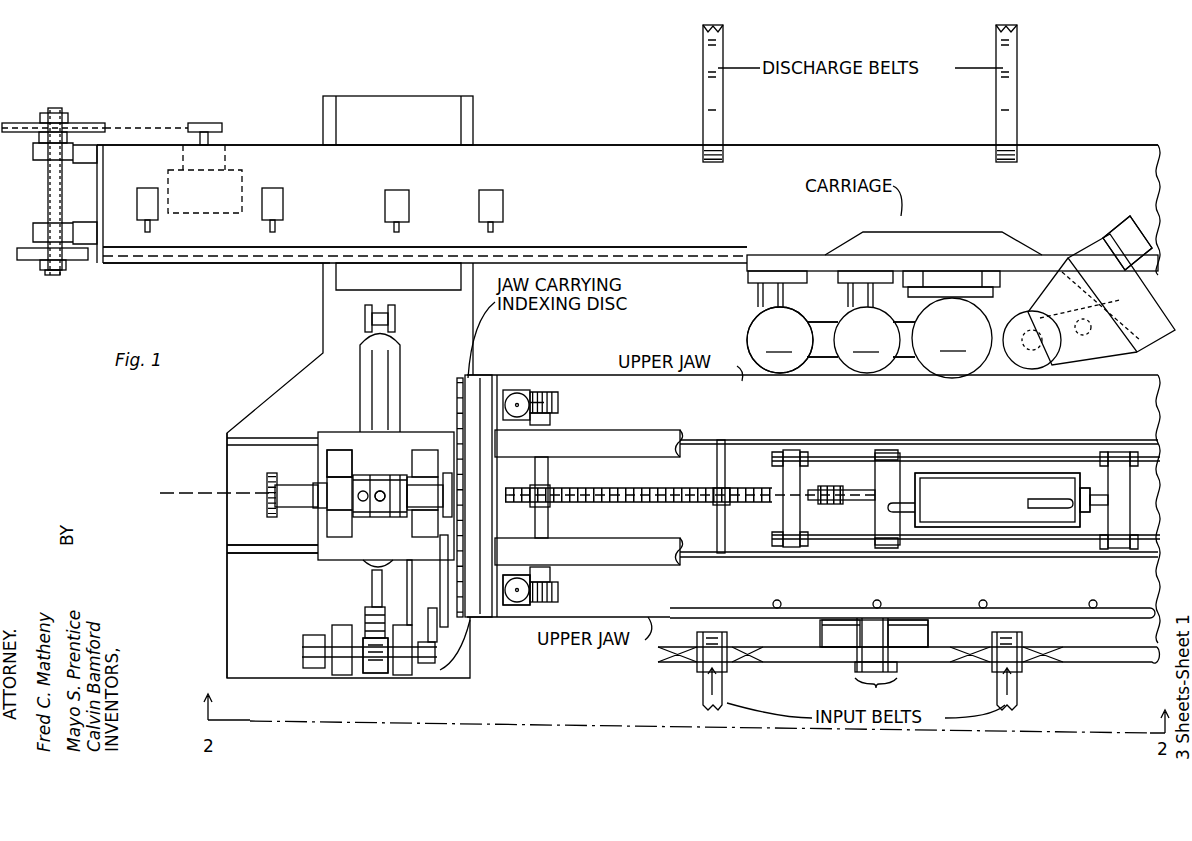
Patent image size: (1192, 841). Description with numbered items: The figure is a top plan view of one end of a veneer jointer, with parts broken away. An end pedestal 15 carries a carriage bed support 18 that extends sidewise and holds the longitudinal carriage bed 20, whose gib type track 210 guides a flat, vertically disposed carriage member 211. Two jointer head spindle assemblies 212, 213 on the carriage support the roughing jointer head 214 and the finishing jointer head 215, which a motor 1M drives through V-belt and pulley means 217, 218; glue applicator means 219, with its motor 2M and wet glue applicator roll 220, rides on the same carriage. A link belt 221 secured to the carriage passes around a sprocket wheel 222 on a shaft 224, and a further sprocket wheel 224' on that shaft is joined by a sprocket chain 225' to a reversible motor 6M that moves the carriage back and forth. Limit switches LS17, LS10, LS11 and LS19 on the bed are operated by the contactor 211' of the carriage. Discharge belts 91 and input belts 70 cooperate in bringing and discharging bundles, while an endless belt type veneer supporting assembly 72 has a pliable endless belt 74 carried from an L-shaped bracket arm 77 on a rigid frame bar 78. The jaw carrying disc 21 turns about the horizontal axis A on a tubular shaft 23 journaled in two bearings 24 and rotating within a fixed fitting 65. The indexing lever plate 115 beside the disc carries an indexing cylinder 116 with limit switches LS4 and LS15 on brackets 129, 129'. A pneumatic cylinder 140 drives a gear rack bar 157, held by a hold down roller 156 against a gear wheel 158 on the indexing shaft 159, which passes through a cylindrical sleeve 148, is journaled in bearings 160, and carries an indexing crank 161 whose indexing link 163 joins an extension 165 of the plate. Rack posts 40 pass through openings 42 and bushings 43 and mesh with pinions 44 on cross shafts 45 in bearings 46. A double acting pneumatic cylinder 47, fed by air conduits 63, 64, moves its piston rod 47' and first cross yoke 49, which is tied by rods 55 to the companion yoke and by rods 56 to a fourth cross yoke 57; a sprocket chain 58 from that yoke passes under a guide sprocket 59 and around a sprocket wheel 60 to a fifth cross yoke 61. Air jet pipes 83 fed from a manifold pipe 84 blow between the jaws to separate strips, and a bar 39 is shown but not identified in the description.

The sprocket wheel 224' is at (53, 111).
The sprocket chain 225' is at (163, 121).
The shaft 224 is at (67, 189).
The sprocket wheel 222 is at (38, 261).
The link belt 221 is at (163, 268).
The limit switch LS17 is at (142, 188).
The reversible motor 6M is at (241, 181).
The limit switch LS10 is at (283, 211).
The limit switch LS11 is at (399, 195).
The limit switch LS19 is at (497, 185).
The carriage bed support 18 is at (396, 102).
The carriage bed 20 is at (543, 152).
The gib type track 210 is at (633, 247).
The discharge belts 91 is at (718, 118).
The carriage member 211 is at (952, 237).
The contactor 211' is at (933, 229).
The jointer head spindle assembly 213 is at (834, 300).
The jointer head spindle assembly 212 is at (742, 343).
The jointer head 214 is at (780, 340).
The jointer head 215 is at (867, 340).
The motor 1M is at (952, 338).
The V-belt and pulley means 217 is at (820, 362).
The V-belt and pulley means 218 is at (920, 362).
The wet glue applicator roll 220 is at (1032, 366).
The motor 2M is at (1140, 332).
The glue applicator means 219 is at (1100, 229).
The pneumatic cylinder 140 is at (366, 388).
The jaw carrying disc 21 is at (457, 387).
The limit switch LS15 is at (386, 496).
The bearings 24 is at (327, 457).
The limit switch LS4 is at (359, 460).
The indexing cylinder 116 is at (413, 478).
The bracket 129 is at (380, 485).
The bracket 129' is at (387, 515).
The fixed fitting 65 is at (276, 485).
The tubular shaft 23 is at (314, 498).
The plate 115 is at (454, 480).
The horizontal axis A is at (173, 493).
The end pedestal 15 is at (232, 548).
The extension 165 is at (442, 549).
The hold down roller 156 is at (367, 622).
The indexing shaft 159 is at (360, 629).
The cylindrical sleeve 148 is at (303, 651).
The bearings 160 is at (342, 660).
The gear wheel 158 is at (380, 655).
The gear rack bar 157 is at (388, 662).
The indexing crank 161 is at (440, 670).
The indexing link 163 is at (447, 627).
The bushing 43 is at (510, 390).
The opening 42 is at (530, 615).
The rack post 40 is at (517, 390).
The jaw bar 39 is at (498, 443).
The cross shaft 45 is at (544, 392).
The pinion 44 is at (556, 392).
The bearings 46 is at (552, 422).
The sprocket wheel 60 is at (515, 486).
The sprocket chain 58 is at (725, 490).
The guide sprocket 59 is at (727, 505).
The fourth cross yoke 57 is at (792, 452).
The fifth cross yoke 61 is at (890, 462).
The rods 56 is at (992, 538).
The air conduit 63 is at (890, 508).
The air conduit 64 is at (1047, 503).
The double acting pneumatic cylinder 47 is at (997, 493).
The piston rod 47' is at (1081, 537).
The first cross yoke 49 is at (1125, 522).
The rods 55 is at (1135, 459).
The air jet pipes 83 is at (877, 598).
The manifold pipe 84 is at (1058, 614).
The input belts 70 is at (727, 703).
The endless belt type veneer supporting assembly 72 is at (874, 663).
The L-shaped bracket arm 77 is at (850, 642).
The pliable endless belt 74 is at (883, 645).
The rigid frame bar 78 is at (915, 632).